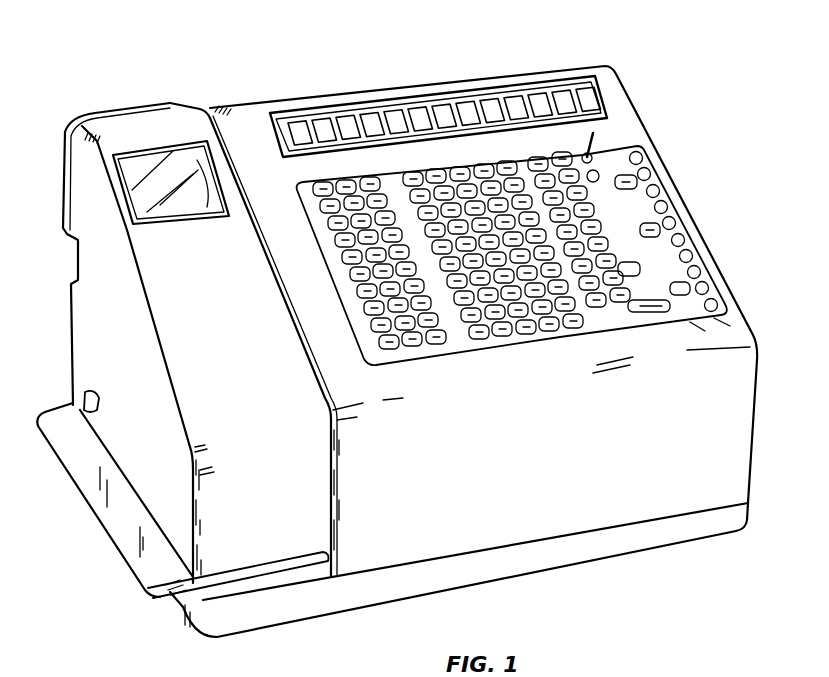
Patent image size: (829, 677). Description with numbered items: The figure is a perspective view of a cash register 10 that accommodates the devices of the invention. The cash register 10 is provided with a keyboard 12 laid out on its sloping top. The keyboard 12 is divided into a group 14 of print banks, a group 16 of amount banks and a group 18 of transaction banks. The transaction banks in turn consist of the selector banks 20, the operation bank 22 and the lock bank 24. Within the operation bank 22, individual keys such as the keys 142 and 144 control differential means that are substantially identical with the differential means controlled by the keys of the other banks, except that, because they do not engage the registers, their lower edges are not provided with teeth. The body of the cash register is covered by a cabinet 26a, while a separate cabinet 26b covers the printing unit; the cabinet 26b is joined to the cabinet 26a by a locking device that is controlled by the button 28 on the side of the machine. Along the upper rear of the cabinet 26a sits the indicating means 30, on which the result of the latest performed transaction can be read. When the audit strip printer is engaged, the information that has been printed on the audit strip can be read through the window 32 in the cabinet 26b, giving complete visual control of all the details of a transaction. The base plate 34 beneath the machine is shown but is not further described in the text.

The cash register 10 is at (283, 88).
The keyboard 12 is at (500, 417).
The group of print banks 14 is at (455, 356).
The group of amount banks 16 is at (600, 333).
The group of transaction banks 18 is at (639, 243).
The selector banks 20 is at (703, 352).
The operation bank 22 is at (699, 327).
The lock bank 24 is at (722, 322).
The cabinet 26a is at (502, 78).
The cabinet 26b is at (127, 118).
The button 28 is at (83, 405).
The indicating means 30 is at (415, 130).
The window 32 is at (185, 160).
The base plate 34 is at (157, 567).
The key 142 is at (661, 229).
The key 144 is at (637, 176).